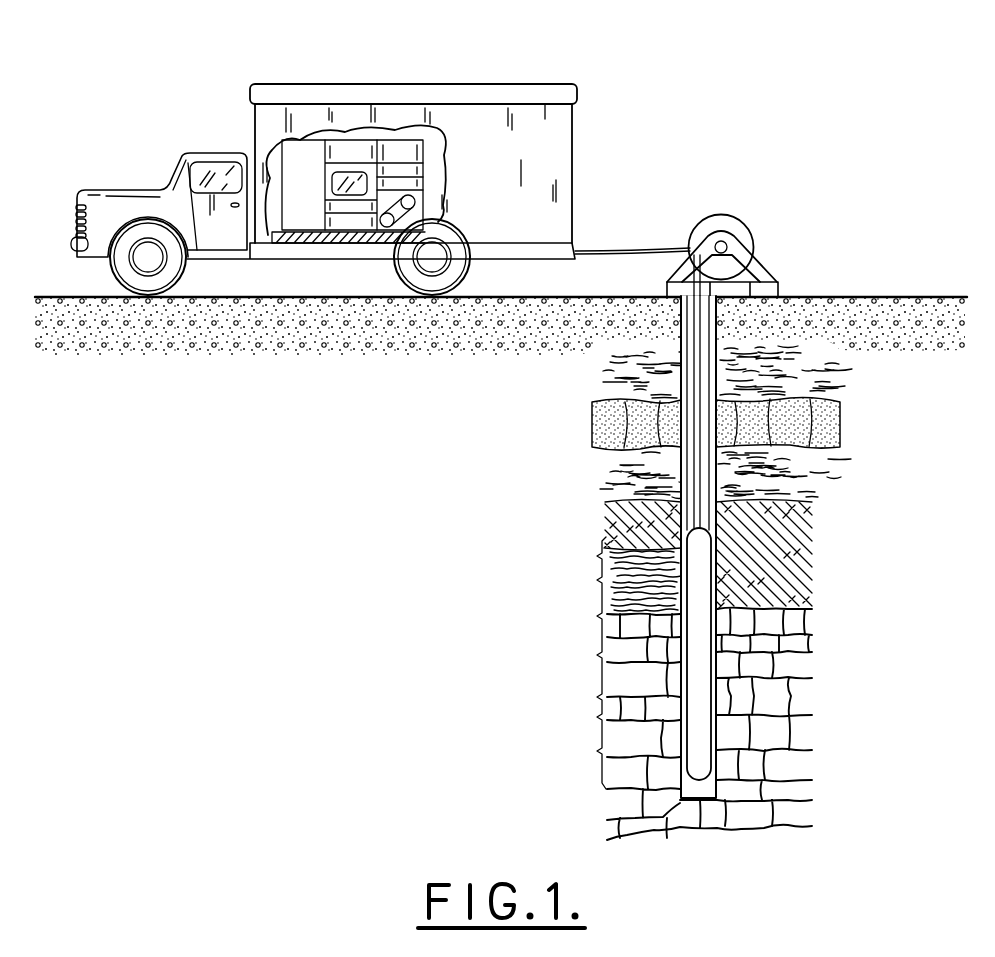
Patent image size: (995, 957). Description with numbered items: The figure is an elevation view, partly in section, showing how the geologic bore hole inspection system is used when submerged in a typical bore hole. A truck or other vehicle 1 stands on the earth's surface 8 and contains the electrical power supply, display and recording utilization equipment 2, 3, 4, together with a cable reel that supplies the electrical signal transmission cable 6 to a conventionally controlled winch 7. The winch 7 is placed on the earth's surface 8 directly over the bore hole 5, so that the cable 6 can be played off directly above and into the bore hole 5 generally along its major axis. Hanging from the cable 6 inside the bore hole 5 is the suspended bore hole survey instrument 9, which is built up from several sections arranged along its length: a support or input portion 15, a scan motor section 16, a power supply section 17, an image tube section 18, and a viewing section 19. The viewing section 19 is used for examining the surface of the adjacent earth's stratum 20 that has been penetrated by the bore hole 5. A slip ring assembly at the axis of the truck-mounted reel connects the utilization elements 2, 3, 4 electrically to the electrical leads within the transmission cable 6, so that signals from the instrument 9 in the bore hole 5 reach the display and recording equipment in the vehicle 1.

The truck or other vehicle 1 is at (132, 158).
The utilization equipment 2 is at (347, 143).
The utilization equipment 3 is at (397, 170).
The utilization equipment 4 is at (421, 204).
The bore hole 5 is at (681, 312).
The transmission cable 6 is at (617, 253).
The winch 7 is at (758, 198).
The earth's surface 8 is at (840, 296).
The bore hole survey instrument 9 is at (711, 577).
The support or input portion 15 is at (597, 558).
The scan motor section 16 is at (597, 603).
The power supply section 17 is at (597, 657).
The image tube section 18 is at (597, 717).
The viewing section 19 is at (597, 762).
The earth's stratum 20 is at (782, 722).